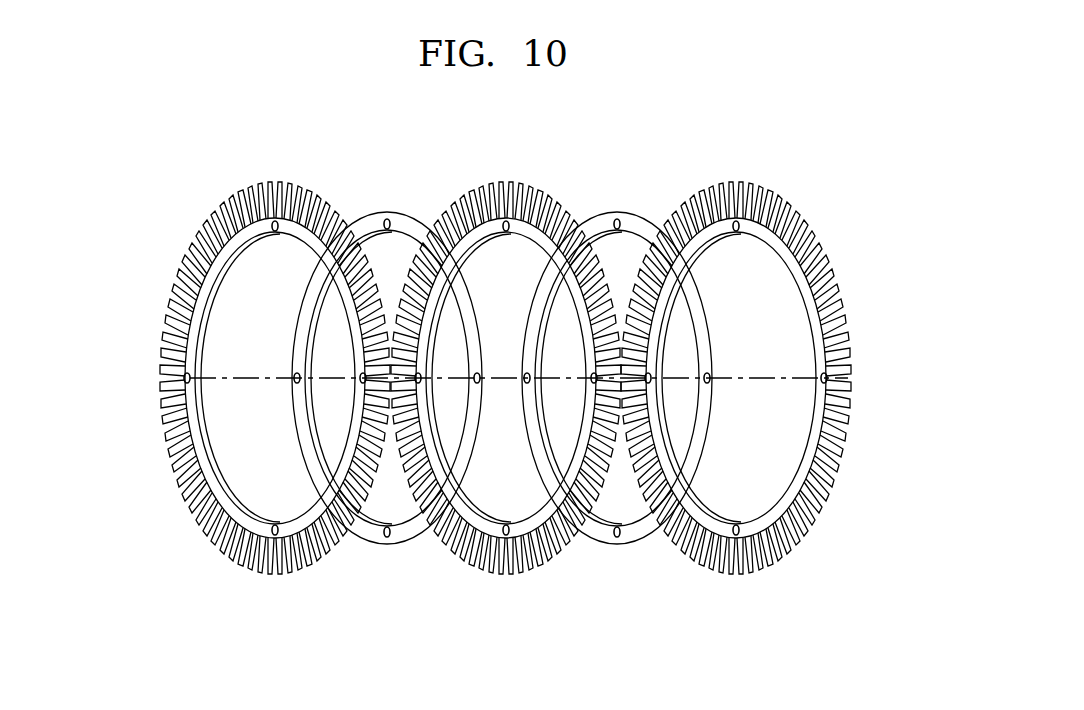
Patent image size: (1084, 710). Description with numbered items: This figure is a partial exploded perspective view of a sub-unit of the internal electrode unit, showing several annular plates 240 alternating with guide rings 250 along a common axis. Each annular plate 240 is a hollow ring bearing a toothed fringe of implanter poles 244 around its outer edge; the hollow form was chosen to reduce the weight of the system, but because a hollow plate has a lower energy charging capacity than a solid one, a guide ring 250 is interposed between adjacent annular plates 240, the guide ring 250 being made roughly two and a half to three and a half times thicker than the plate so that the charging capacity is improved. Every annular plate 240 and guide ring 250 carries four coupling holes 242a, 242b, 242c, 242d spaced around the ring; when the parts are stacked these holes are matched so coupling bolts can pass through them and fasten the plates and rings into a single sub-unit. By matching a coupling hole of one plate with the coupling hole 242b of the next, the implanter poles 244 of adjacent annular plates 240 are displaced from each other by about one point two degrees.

The annular plate 240 is at (500, 391).
The implanter poles 244 is at (183, 291).
The guide ring 250 is at (410, 527).
The coupling hole 242a is at (236, 222).
The coupling hole 242b is at (530, 187).
The coupling hole 242c is at (743, 183).
The coupling hole 242d is at (185, 378).